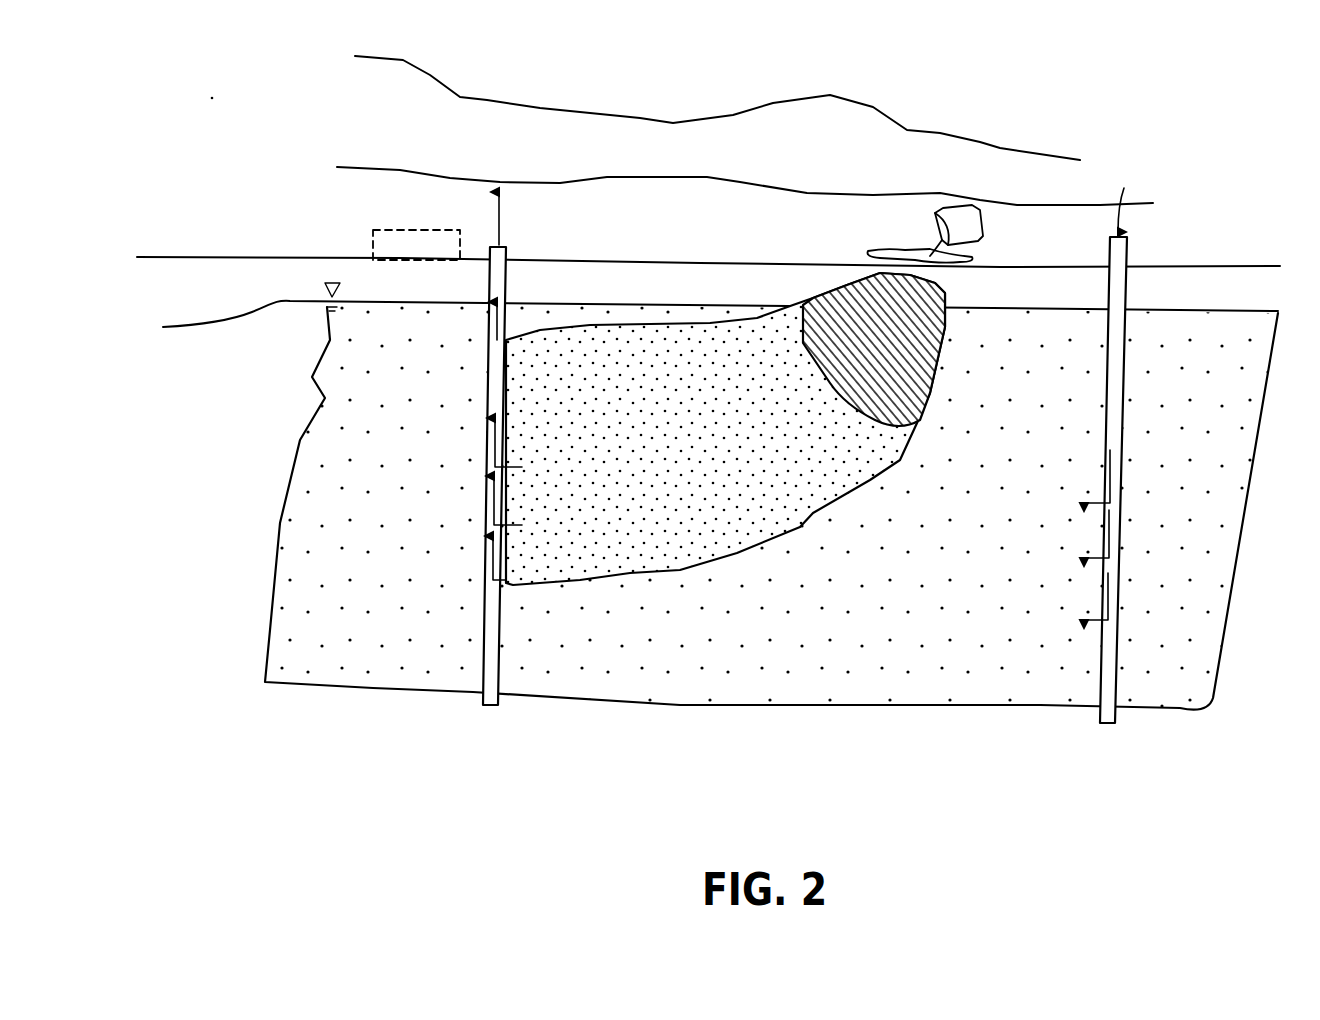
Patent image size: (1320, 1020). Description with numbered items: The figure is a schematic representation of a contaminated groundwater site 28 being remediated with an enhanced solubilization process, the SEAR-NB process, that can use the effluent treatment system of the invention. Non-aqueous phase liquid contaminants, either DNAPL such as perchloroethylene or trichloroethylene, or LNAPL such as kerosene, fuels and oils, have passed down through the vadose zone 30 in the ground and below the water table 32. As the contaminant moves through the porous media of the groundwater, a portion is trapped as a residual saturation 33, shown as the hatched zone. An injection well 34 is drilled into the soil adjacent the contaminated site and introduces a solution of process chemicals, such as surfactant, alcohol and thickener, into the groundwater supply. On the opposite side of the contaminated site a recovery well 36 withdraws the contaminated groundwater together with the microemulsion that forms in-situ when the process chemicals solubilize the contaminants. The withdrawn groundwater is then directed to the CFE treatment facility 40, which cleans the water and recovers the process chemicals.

The contaminated groundwater site 28 is at (1008, 115).
The vadose zone 30 is at (597, 290).
The water table 32 is at (699, 315).
The residual saturation 33 is at (933, 380).
The injection well 34 is at (1100, 663).
The recovery well 36 is at (483, 613).
The CFE treatment facility 40 is at (410, 230).